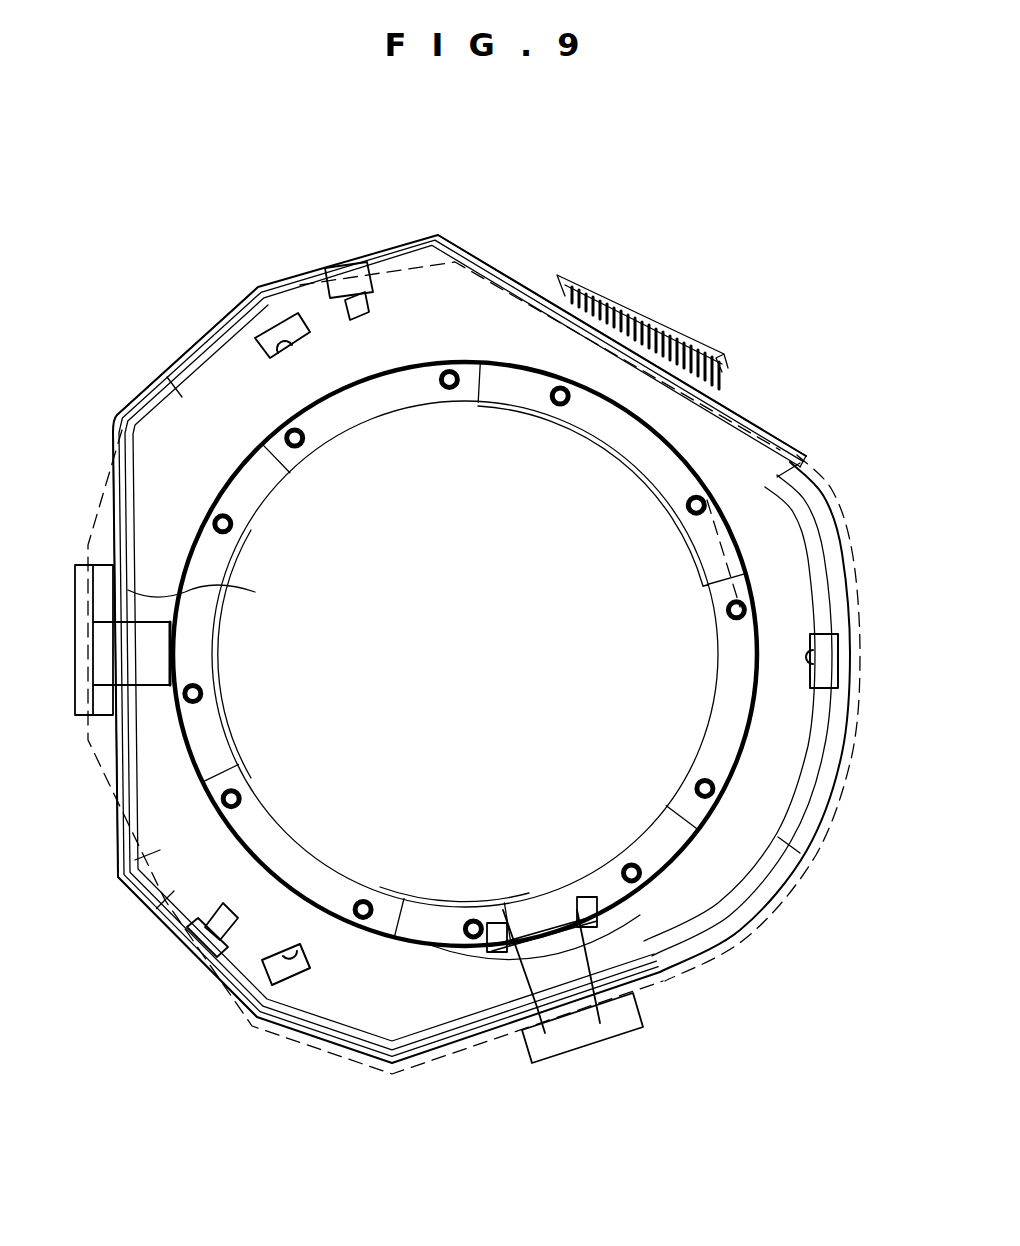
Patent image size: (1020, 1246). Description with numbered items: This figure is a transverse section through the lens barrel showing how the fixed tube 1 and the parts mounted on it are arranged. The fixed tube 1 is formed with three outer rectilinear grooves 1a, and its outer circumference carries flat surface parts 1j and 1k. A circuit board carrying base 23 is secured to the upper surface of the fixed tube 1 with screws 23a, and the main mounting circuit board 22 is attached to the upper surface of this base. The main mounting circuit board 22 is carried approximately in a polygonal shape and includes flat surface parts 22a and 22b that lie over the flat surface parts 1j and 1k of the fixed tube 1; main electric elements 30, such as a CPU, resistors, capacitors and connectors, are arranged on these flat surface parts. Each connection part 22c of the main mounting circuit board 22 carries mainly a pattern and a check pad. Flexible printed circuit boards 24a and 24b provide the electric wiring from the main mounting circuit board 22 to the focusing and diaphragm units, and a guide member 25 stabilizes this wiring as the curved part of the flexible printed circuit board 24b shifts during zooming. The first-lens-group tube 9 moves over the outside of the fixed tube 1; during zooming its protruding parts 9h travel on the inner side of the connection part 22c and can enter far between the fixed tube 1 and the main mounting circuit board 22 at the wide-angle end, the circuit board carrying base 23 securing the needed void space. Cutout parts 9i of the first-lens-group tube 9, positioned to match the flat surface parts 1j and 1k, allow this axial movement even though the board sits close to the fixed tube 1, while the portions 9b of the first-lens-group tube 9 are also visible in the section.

The fixed tube 1 is at (600, 427).
The outer rectilinear grooves 1a is at (813, 662).
The flat surface part 1j is at (695, 395).
The flat surface part 1k is at (209, 593).
The first-lens-group tube 9 is at (833, 558).
The housing bracket 9b is at (280, 318).
The protruding parts 9h is at (168, 383).
The cutout parts 9i is at (467, 272).
The main mounting circuit board 22 is at (790, 447).
The flat surface part 22a is at (497, 262).
The flat surface part 22b is at (123, 520).
The connection part 22c is at (220, 318).
The circuit board carrying base 23 is at (538, 360).
The screws 23a is at (340, 268).
The flexible printed circuit board 24a is at (145, 690).
The flexible printed circuit board 24b is at (598, 950).
The guide member 25 is at (540, 905).
The main electric elements 30 is at (627, 300).